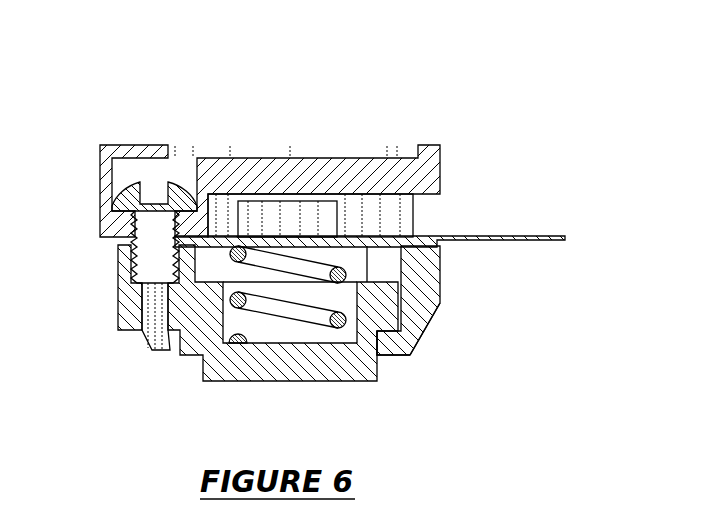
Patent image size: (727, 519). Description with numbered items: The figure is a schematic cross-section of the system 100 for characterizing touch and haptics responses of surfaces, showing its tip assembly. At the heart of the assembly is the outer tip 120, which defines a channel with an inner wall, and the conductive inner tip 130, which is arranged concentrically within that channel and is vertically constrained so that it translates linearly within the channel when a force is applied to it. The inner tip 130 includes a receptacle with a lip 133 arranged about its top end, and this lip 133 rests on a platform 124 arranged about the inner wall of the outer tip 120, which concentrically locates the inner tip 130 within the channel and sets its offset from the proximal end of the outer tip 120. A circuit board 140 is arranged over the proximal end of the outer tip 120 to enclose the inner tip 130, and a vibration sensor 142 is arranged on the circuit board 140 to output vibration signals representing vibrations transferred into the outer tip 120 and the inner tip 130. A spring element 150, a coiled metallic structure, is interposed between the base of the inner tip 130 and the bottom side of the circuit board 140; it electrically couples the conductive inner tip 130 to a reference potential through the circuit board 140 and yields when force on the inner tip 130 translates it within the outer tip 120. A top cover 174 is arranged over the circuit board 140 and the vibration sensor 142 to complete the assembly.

The system 100 is at (97, 98).
The outer tip 120 is at (430, 292).
The platform 124 is at (393, 343).
The conductive inner tip 130 is at (213, 357).
The lip 133 is at (430, 317).
The circuit board 140 is at (553, 236).
The vibration sensor 142 is at (287, 207).
The spring element 150 is at (180, 357).
The top cover 174 is at (205, 143).